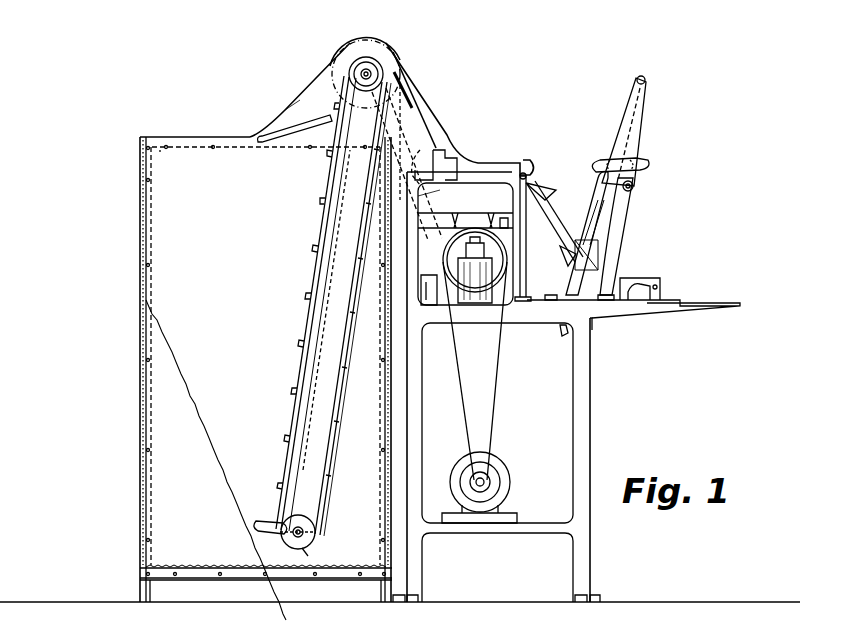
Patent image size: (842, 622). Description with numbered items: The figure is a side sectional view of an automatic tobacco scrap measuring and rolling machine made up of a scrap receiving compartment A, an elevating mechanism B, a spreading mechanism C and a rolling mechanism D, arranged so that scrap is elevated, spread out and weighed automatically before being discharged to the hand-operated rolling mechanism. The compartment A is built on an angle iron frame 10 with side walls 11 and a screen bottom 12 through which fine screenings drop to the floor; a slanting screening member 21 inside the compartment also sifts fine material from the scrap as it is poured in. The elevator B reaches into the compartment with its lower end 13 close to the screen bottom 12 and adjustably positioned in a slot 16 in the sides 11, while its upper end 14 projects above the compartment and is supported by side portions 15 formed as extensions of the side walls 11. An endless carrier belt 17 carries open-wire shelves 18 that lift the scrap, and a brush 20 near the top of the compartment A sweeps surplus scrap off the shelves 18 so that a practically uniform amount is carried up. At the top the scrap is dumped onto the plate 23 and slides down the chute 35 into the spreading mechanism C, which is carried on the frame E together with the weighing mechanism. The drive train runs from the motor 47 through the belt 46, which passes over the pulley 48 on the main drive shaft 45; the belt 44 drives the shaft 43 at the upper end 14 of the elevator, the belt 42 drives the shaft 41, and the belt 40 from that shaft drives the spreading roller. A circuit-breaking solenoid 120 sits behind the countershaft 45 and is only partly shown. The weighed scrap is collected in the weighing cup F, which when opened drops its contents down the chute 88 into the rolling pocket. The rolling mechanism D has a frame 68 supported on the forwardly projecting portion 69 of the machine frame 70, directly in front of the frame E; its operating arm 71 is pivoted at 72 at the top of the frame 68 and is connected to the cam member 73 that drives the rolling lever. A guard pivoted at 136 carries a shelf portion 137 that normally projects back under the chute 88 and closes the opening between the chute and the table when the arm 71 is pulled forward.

The angle iron frame 10 is at (140, 400).
The side walls 11 is at (160, 298).
The screen bottom 12 is at (226, 567).
The lower end 13 is at (318, 527).
The upper end 14 is at (370, 72).
The side portions 15 is at (300, 100).
The slot 16 is at (268, 518).
The endless carrier belt 17 is at (308, 307).
The wire shelves 18 is at (282, 482).
The brush 20 is at (284, 142).
The screening member 21 is at (226, 490).
The plate 23 is at (402, 78).
The chute 35 is at (430, 122).
The belt 40 is at (452, 152).
The shaft 41 is at (430, 200).
The belt 42 is at (436, 132).
The shaft 43 is at (364, 70).
The belt 44 is at (392, 168).
The shaft 45 is at (498, 303).
The belt 46 is at (492, 390).
The motor 47 is at (500, 474).
The pulley 48 is at (462, 305).
The frame 68 is at (614, 262).
The forwardly projecting portion 69 is at (596, 322).
The frame 70 is at (590, 444).
The operating arm 71 is at (600, 232).
The pivot 72 is at (646, 82).
The cam member 73 is at (652, 166).
The chute 88 is at (545, 222).
The circuit-breaking solenoid 120 is at (430, 306).
The pivot 136 is at (560, 334).
The shelf portion 137 is at (564, 264).
The scrap receiving compartment A is at (195, 150).
The elevating mechanism B is at (337, 105).
The spreading mechanism C is at (462, 163).
The rolling mechanism D is at (635, 134).
The frame E is at (512, 200).
The weighing cup F is at (542, 182).